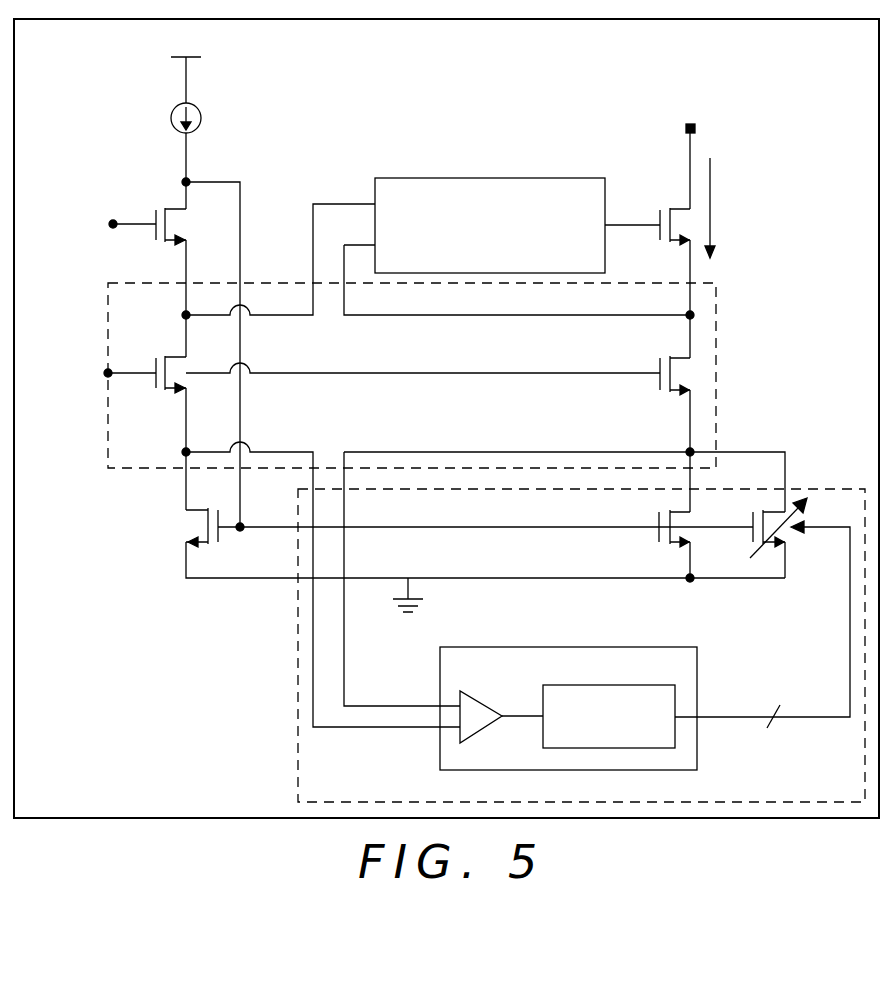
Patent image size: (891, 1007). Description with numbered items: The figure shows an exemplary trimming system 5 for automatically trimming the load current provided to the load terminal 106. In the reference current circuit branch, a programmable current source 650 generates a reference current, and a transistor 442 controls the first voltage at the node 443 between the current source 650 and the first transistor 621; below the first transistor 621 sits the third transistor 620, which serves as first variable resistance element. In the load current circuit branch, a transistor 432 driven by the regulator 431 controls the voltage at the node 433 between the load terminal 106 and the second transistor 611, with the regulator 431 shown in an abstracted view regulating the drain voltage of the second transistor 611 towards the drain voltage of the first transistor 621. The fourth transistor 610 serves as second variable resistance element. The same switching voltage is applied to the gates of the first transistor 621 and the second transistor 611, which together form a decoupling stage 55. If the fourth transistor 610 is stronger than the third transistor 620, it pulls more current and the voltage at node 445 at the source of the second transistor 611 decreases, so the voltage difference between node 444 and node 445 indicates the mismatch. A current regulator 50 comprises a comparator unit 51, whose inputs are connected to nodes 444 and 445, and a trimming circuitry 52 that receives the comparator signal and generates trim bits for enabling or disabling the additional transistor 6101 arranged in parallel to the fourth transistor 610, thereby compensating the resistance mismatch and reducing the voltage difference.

The trimming system 5 is at (674, 84).
The programmable current source 650 is at (201, 118).
The transistor 442 is at (172, 202).
The node 443 is at (176, 318).
The node 444 is at (176, 452).
The regulator 431 is at (528, 178).
The transistor 432 is at (675, 206).
The node 433 is at (700, 316).
The node 445 is at (702, 449).
The load terminal 106 is at (700, 128).
The decoupling stage 55 is at (718, 342).
The first transistor 621 is at (150, 386).
The second transistor 611 is at (688, 378).
The third transistor 620 is at (192, 527).
The fourth transistor 610 is at (696, 532).
The additional transistor 6101 is at (806, 508).
The current regulator 50 is at (645, 770).
The comparator unit 51 is at (478, 730).
The trimming circuitry 52 is at (622, 686).